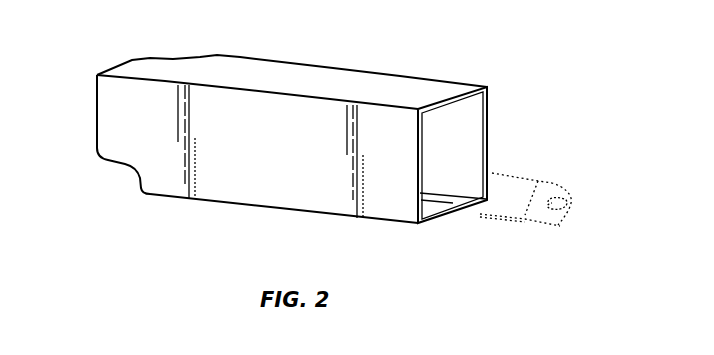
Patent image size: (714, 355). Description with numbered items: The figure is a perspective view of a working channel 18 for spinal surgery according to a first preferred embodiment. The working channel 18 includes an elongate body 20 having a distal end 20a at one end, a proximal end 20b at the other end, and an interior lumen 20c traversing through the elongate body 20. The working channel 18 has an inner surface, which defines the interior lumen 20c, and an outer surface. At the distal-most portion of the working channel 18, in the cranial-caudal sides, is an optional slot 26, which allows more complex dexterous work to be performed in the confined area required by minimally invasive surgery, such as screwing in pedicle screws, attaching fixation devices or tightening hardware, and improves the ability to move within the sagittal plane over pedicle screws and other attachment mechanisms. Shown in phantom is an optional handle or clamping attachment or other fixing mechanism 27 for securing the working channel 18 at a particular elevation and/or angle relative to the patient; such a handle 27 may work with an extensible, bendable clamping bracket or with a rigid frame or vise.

The working channel 18 is at (377, 35).
The elongate body 20 is at (398, 82).
The distal end 20a is at (95, 88).
The proximal end 20b is at (425, 224).
The interior lumen 20c is at (472, 116).
The slot 26 is at (130, 175).
The handle or clamping attachment 27 is at (557, 178).